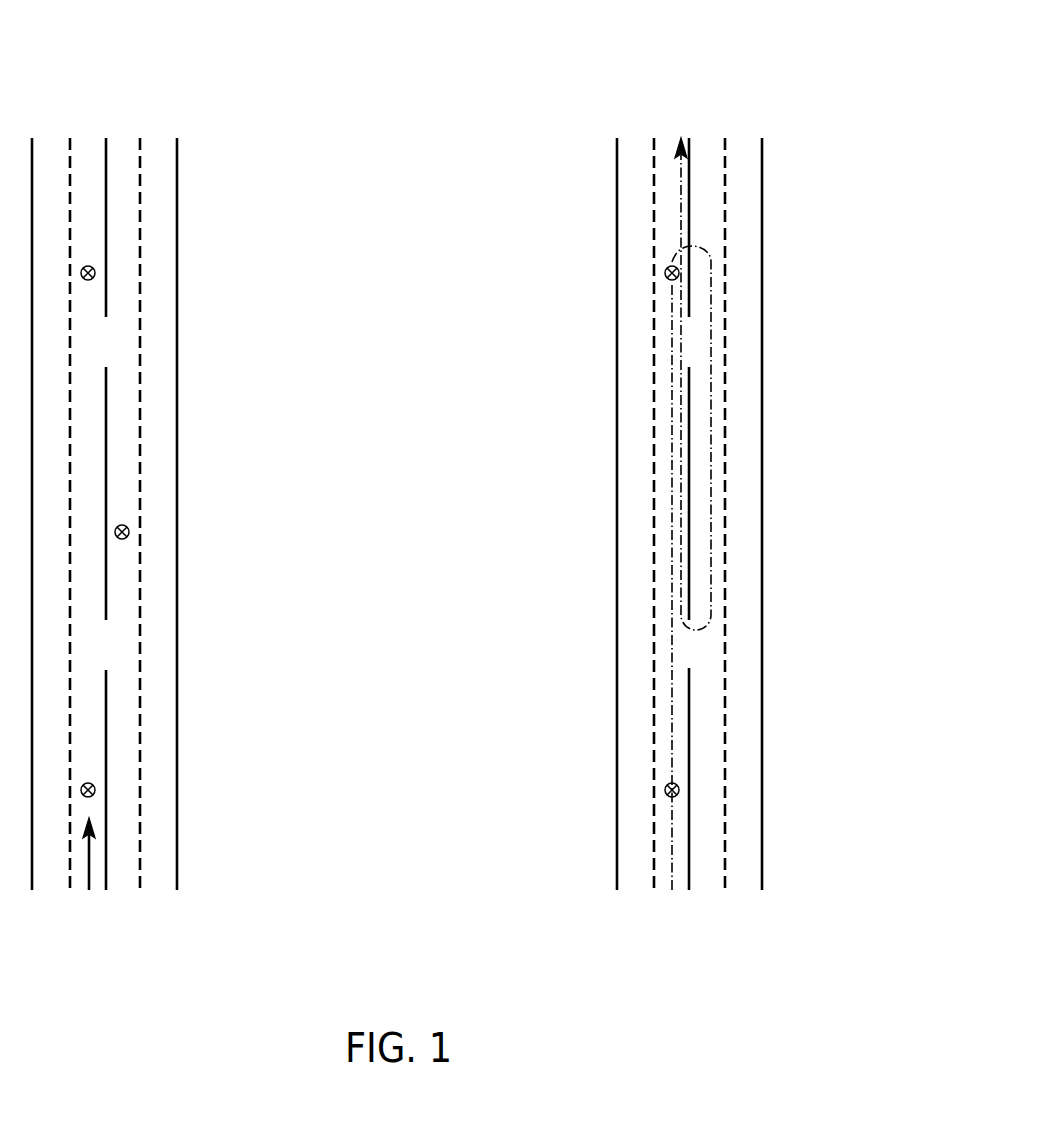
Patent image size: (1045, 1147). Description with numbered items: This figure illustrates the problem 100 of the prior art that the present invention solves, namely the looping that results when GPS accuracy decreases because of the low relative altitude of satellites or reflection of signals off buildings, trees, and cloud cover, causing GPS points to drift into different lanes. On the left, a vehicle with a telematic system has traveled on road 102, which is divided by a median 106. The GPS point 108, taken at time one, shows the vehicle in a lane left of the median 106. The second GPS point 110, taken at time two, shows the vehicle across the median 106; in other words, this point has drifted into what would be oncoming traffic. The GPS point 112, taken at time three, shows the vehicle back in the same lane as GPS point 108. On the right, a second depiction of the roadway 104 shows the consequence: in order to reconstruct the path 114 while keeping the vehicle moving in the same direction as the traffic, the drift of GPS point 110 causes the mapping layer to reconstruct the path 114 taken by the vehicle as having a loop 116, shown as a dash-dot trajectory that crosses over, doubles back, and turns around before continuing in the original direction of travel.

The problem of the prior art 100 is at (919, 48).
The road 102 is at (123, 138).
The second roadway 104 is at (762, 138).
The median 106 is at (114, 438).
The GPS point 108 is at (96, 790).
The second GPS point 110 is at (130, 532).
The GPS point 112 is at (96, 273).
The path 114 is at (672, 725).
The loop 116 is at (710, 413).